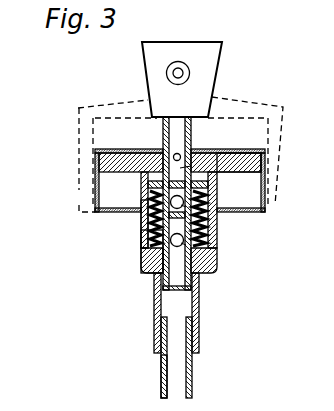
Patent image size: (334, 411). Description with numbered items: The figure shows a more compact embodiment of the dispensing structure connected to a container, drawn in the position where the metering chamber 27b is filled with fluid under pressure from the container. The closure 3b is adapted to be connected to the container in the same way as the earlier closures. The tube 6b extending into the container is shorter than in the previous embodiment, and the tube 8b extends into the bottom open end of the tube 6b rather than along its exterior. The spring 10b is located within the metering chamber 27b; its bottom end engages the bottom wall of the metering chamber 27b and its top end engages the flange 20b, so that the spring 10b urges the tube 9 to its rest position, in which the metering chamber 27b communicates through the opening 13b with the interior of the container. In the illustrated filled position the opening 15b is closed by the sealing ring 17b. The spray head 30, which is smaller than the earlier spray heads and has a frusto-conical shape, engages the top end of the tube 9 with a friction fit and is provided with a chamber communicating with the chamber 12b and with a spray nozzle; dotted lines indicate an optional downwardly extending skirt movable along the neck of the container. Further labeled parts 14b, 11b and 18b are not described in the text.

The spray head 30 is at (207, 60).
The tube 9 is at (193, 135).
The opening 15b is at (181, 156).
The sealing ring 17b is at (148, 152).
The closure 3b is at (95, 190).
The chamber 12b is at (265, 169).
The flange 20b is at (212, 190).
The spring 14b is at (212, 213).
The spring 10b is at (141, 227).
The metering chamber 27b is at (213, 235).
The opening 13b is at (216, 265).
The housing lower portion 18b is at (140, 267).
The neck 11b is at (198, 286).
The tube 6b is at (193, 328).
The tube 8b is at (161, 368).